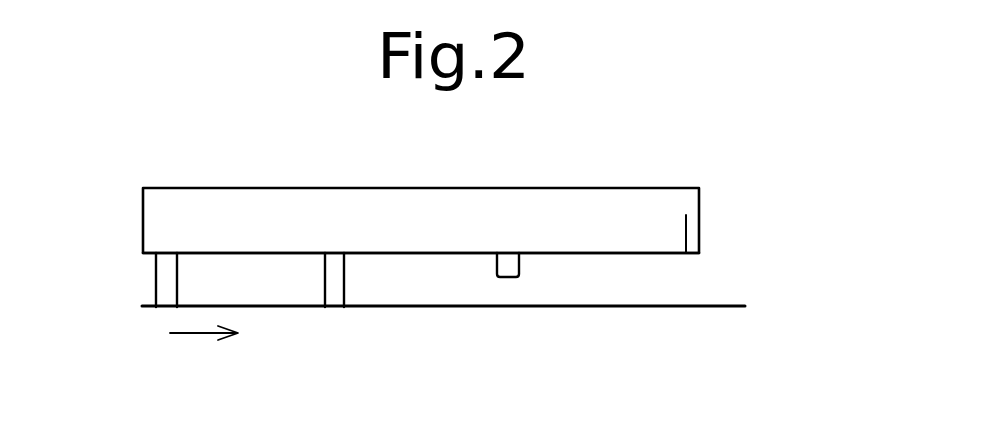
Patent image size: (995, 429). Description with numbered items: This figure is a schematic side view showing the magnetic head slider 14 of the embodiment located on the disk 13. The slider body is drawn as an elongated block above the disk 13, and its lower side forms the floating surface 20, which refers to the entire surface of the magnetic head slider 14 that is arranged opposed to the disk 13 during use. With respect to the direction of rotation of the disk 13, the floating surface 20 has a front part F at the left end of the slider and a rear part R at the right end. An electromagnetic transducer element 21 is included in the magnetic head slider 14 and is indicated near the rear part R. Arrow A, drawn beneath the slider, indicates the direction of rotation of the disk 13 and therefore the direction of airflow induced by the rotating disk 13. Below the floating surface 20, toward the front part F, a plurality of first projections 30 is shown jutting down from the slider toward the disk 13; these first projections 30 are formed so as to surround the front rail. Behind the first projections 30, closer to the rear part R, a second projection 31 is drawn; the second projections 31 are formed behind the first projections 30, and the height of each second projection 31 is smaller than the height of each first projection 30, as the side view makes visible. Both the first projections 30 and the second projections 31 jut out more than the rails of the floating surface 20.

The front part F is at (143, 207).
The rear part R is at (700, 205).
The magnetic head slider 14 is at (645, 208).
The floating surface 20 is at (415, 253).
The electromagnetic transducer element 21 is at (686, 236).
The first projections 30 is at (165, 282).
The second projections 31 is at (508, 268).
The disk 13 is at (700, 304).
The arrow A is at (193, 333).